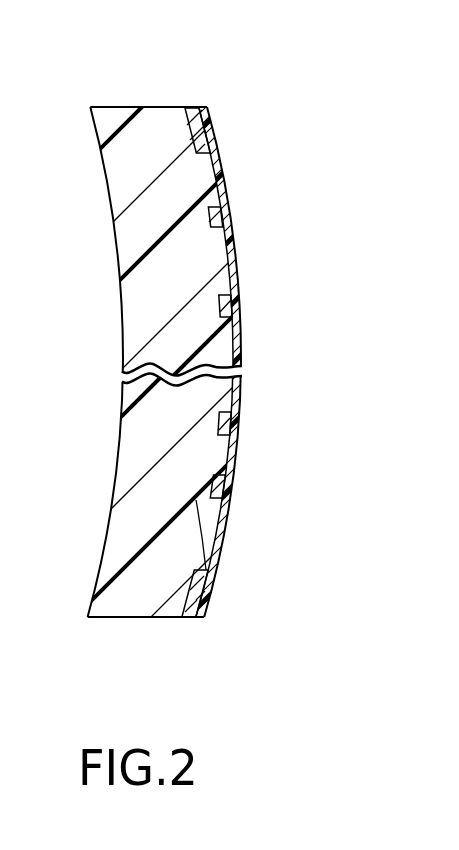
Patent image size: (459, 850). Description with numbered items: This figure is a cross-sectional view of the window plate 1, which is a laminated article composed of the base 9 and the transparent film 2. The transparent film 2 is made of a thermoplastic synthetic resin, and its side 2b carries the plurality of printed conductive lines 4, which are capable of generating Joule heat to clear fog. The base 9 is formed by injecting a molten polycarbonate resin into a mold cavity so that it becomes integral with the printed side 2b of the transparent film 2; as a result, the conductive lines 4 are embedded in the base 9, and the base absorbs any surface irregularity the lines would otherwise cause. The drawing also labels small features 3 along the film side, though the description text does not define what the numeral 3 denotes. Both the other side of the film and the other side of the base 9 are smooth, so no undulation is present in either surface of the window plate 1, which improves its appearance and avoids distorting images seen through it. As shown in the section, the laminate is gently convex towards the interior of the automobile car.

The window plate 1 is at (229, 362).
The transparent film 2 is at (224, 555).
The printed side of the transparent film 2b is at (212, 516).
The end retaining blocks 3 is at (199, 120).
The printed conductive lines 4 is at (212, 310).
The base 9 is at (105, 603).